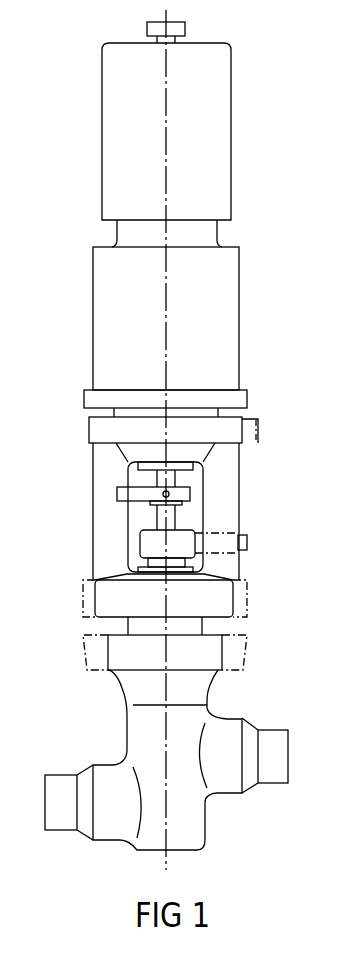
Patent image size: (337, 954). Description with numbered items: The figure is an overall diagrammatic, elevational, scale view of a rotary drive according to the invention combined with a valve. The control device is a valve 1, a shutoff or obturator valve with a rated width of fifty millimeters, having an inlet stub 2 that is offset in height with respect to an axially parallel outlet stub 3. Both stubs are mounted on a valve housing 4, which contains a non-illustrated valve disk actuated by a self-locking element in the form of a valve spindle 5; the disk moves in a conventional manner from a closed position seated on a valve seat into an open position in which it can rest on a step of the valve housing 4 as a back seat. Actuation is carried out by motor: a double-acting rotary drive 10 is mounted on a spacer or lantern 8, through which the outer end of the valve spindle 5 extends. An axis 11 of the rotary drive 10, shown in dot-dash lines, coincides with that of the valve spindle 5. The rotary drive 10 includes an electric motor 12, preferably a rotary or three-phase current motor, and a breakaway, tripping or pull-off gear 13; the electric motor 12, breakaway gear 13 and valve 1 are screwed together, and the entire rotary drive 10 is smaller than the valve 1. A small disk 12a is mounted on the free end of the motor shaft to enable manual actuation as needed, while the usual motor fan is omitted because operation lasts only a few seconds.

The valve 1 is at (208, 698).
The inlet stub 2 is at (67, 820).
The outlet stub 3 is at (268, 777).
The valve housing 4 is at (127, 729).
The valve spindle 5 is at (158, 515).
The lantern 8 is at (100, 487).
The rotary drive 10 is at (64, 256).
The axis 11 is at (166, 170).
The electric motor 12 is at (115, 133).
The small disk 12a is at (186, 29).
The breakaway gear 13 is at (93, 341).